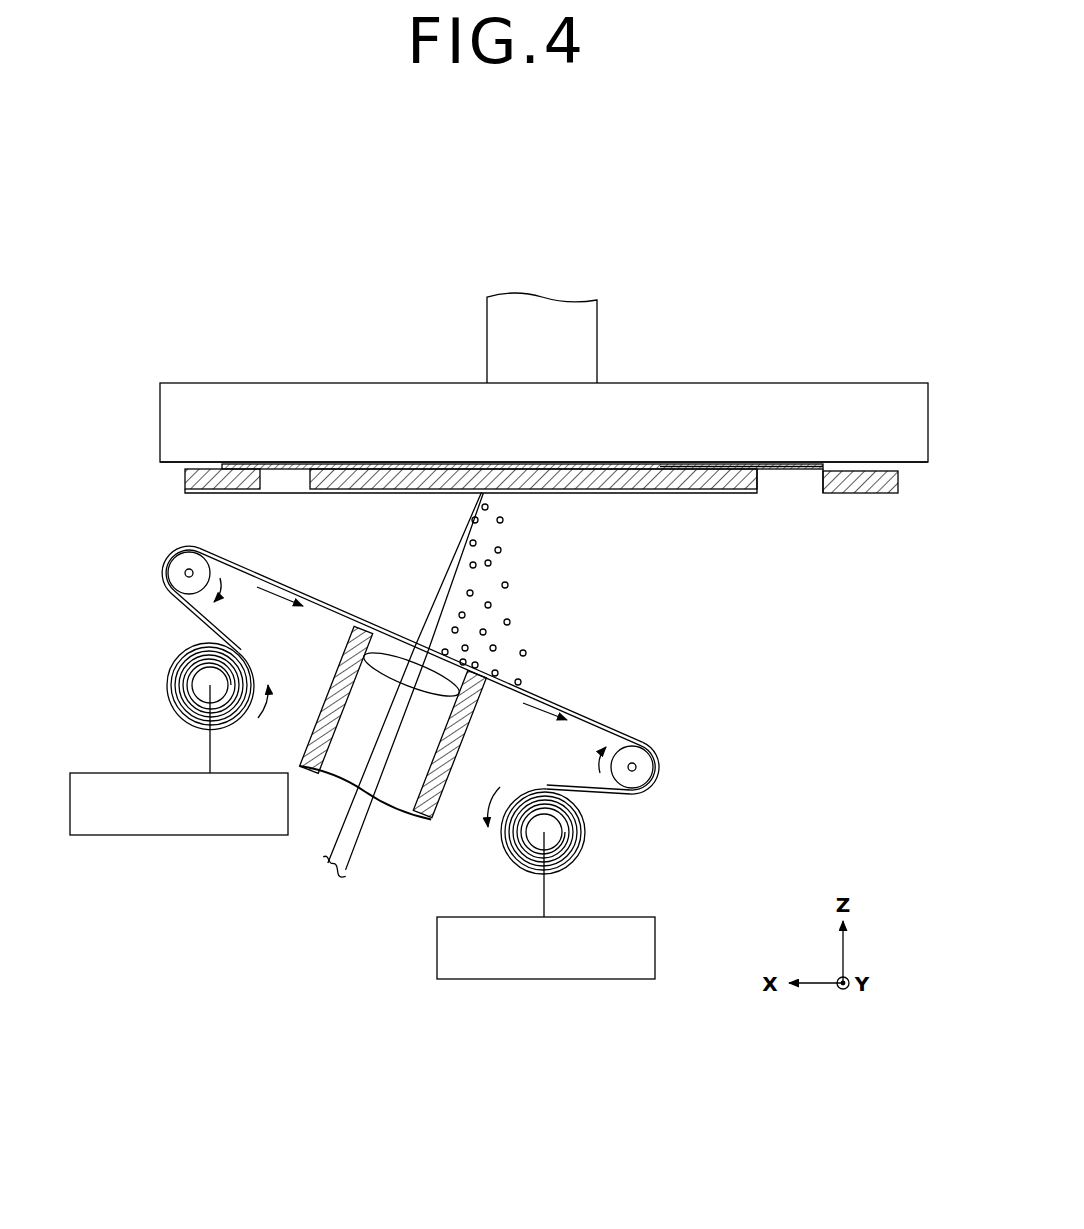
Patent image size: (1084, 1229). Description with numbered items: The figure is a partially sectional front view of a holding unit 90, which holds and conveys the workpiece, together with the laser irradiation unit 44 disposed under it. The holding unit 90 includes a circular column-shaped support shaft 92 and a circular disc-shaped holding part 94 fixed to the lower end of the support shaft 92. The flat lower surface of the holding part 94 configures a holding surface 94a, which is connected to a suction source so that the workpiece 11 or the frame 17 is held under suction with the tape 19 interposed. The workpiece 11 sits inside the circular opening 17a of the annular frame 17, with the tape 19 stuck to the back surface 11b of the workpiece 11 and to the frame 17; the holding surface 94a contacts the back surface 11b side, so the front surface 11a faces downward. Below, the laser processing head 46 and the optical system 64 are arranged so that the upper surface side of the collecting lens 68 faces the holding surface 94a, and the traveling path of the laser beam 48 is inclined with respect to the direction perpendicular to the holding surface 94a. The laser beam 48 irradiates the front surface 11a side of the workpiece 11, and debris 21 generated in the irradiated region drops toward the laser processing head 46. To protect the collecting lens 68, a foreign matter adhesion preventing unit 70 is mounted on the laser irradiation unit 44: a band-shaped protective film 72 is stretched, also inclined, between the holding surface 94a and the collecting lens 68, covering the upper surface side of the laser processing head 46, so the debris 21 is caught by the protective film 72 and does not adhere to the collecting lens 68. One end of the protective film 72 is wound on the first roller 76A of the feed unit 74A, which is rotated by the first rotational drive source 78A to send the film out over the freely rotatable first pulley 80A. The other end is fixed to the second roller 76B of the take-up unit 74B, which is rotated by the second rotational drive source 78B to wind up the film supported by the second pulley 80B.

The holding unit 90 is at (343, 295).
The holding part 94 is at (232, 404).
The holding surface 94a is at (350, 480).
The support shaft 92 is at (488, 330).
The workpiece 11 is at (768, 481).
The front surface 11a is at (690, 492).
The back surface 11b is at (693, 468).
The tape 19 is at (793, 468).
The frame 17 is at (865, 493).
The opening 17a is at (812, 482).
The debris 21 is at (500, 551).
The laser irradiation unit 44 is at (365, 935).
The laser processing head 46 is at (427, 820).
The laser beam 48 is at (430, 622).
The optical system 64 is at (315, 820).
The collecting lens 68 is at (368, 703).
The foreign matter adhesion preventing unit 70 is at (625, 720).
The protective film 72 is at (553, 700).
The feed unit 74A is at (180, 615).
The take-up unit 74B is at (612, 805).
The first roller 76A is at (200, 680).
The second roller 76B is at (558, 837).
The first rotational drive source 78A is at (188, 835).
The second rotational drive source 78B is at (518, 982).
The first pulley 80A is at (177, 570).
The second pulley 80B is at (645, 770).